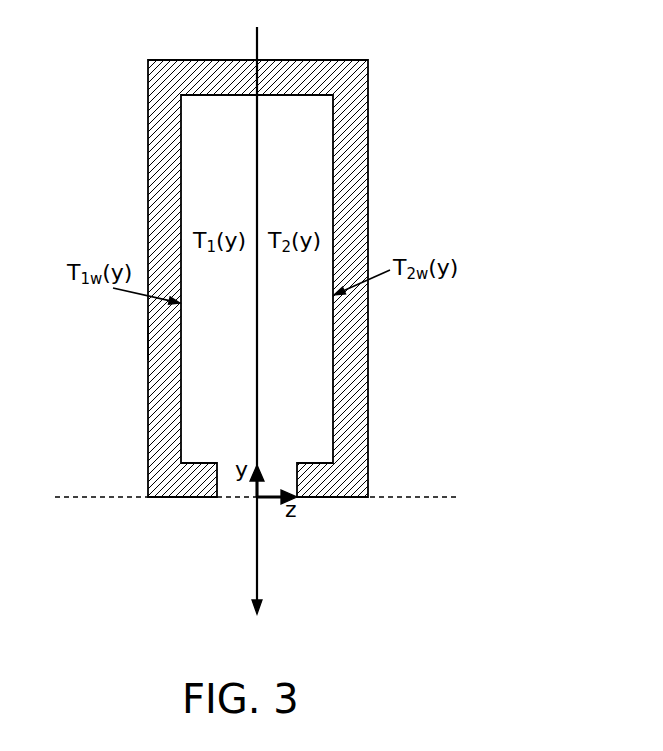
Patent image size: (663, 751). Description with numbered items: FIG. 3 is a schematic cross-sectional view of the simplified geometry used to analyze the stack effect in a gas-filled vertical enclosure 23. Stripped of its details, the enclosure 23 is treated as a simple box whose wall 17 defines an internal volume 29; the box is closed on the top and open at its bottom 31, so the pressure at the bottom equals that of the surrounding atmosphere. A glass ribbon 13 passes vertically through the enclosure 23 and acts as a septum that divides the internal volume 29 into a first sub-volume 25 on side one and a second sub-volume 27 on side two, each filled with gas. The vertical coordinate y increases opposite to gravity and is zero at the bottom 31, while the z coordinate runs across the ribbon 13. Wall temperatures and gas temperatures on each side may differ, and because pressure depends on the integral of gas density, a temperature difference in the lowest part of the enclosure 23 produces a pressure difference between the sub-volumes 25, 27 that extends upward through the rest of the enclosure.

The ribbon 13 is at (258, 178).
The wall 17 is at (347, 183).
The enclosure 23 is at (127, 345).
The first sub-volume 25 is at (219, 279).
The second sub-volume 27 is at (295, 279).
The internal volume 29 is at (220, 120).
The bottom 31 is at (231, 508).